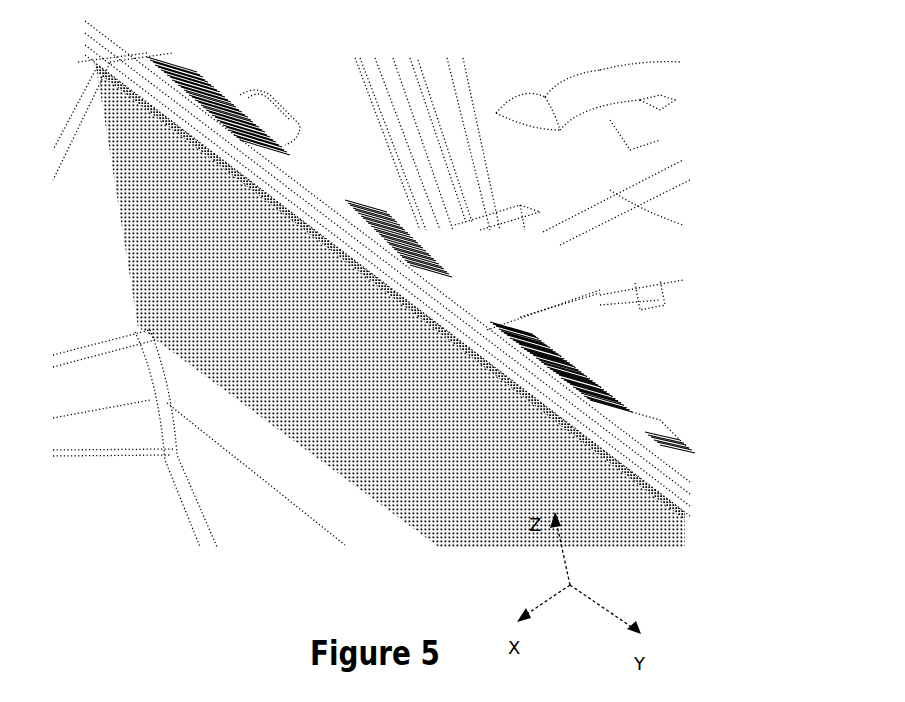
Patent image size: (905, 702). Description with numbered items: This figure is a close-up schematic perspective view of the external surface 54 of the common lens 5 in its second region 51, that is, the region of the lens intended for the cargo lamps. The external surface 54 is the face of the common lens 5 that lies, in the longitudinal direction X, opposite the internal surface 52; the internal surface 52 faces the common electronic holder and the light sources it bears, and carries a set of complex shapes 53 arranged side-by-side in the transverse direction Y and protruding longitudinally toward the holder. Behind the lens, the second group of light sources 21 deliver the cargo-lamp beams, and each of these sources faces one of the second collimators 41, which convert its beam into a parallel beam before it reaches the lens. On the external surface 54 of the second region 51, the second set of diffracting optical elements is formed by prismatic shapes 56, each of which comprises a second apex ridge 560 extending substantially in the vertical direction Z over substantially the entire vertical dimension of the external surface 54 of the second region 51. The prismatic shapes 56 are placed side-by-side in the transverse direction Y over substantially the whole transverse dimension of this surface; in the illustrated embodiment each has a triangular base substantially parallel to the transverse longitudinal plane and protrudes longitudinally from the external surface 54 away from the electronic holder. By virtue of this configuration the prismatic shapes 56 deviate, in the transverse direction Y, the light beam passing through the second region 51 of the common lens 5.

The common lens 5 is at (667, 478).
The second group of light sources 21 is at (648, 87).
The second collimators 41 is at (550, 128).
The second region 51 is at (490, 360).
The internal surface 52 is at (263, 157).
The complex shapes 53 is at (355, 210).
The external surface 54 is at (138, 88).
The prismatic shapes 56 is at (143, 208).
The second apex ridge 560 is at (248, 278).